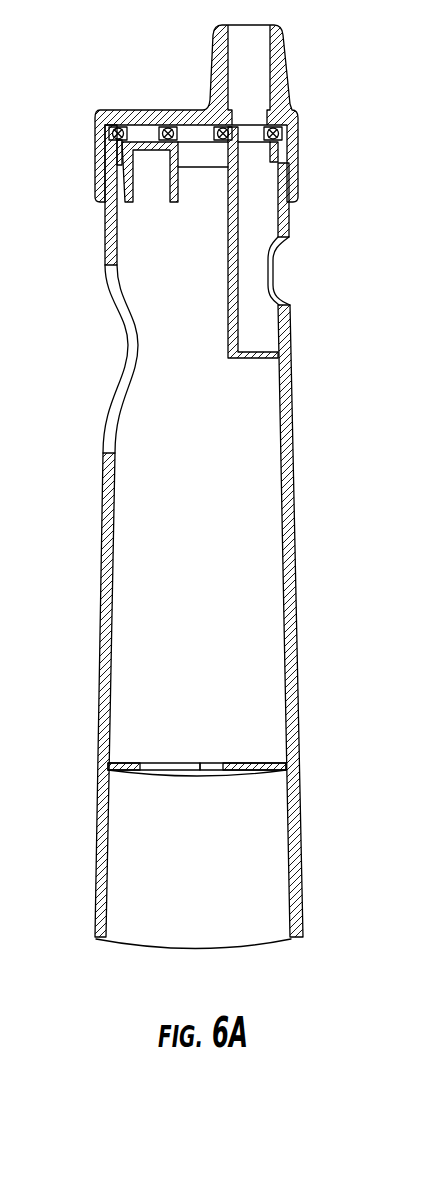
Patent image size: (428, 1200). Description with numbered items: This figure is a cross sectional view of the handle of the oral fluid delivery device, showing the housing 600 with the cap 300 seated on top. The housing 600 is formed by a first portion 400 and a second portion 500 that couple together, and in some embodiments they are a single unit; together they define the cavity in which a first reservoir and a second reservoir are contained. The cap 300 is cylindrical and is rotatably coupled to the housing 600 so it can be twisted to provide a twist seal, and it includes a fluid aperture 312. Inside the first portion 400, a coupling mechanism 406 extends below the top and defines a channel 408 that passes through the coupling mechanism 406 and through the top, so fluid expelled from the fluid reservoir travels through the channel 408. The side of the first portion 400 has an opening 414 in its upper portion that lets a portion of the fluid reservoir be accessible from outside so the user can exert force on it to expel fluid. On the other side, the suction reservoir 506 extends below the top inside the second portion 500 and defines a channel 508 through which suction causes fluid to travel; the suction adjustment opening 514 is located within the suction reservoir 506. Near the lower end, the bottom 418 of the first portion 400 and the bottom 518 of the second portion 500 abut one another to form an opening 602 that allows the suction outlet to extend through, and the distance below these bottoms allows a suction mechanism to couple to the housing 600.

The cap 300 is at (322, 75).
The fluid aperture 312 is at (277, 134).
The first portion 400 is at (76, 559).
The coupling mechanism 406 is at (122, 176).
The channel 408 is at (141, 187).
The opening 414 is at (128, 360).
The bottom 418 is at (130, 763).
The second portion 500 is at (312, 474).
The suction reservoir 506 is at (289, 218).
The channel 508 is at (254, 340).
The suction adjustment opening 514 is at (287, 282).
The bottom 518 is at (262, 762).
The housing 600 is at (334, 600).
The opening 602 is at (203, 783).